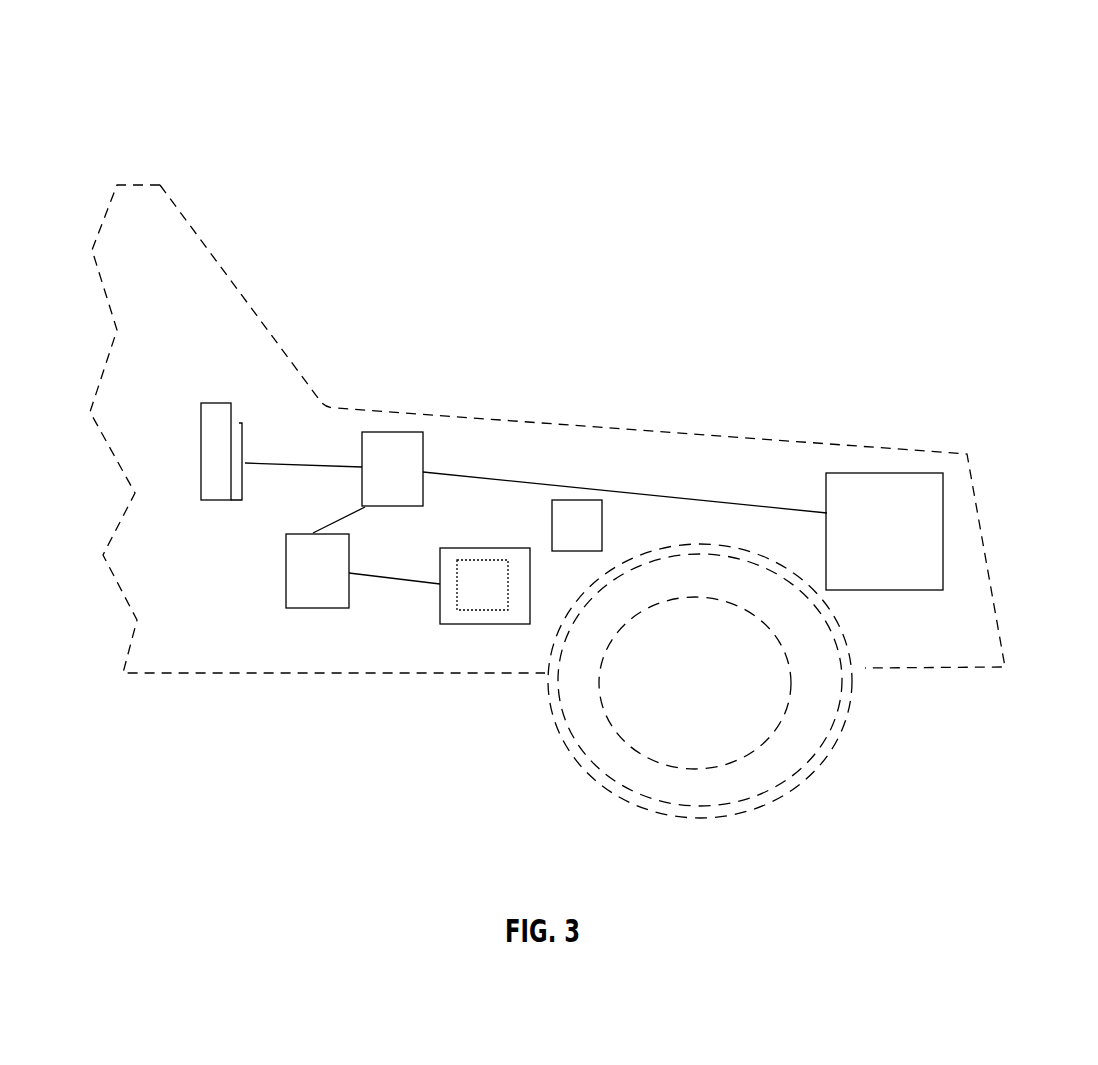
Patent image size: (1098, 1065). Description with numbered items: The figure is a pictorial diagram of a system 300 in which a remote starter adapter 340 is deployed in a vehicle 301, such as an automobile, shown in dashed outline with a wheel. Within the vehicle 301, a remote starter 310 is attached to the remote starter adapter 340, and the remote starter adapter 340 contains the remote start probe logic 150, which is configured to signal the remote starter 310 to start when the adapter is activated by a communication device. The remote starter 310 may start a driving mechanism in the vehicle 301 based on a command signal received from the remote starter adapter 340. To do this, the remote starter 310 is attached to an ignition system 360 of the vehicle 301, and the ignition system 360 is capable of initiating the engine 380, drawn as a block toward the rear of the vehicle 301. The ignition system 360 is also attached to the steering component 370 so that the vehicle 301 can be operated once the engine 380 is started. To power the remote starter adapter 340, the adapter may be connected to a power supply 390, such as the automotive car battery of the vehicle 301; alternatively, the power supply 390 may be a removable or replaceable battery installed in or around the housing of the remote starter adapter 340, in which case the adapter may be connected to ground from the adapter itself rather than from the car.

The system 300 is at (998, 68).
The vehicle 301 is at (620, 430).
The remote starter 310 is at (333, 610).
The remote starter adapter 340 is at (473, 624).
The remote start probe logic 150 is at (482, 585).
The ignition system 360 is at (393, 432).
The steering component 370 is at (215, 403).
The engine 380 is at (868, 473).
The power supply 390 is at (575, 552).